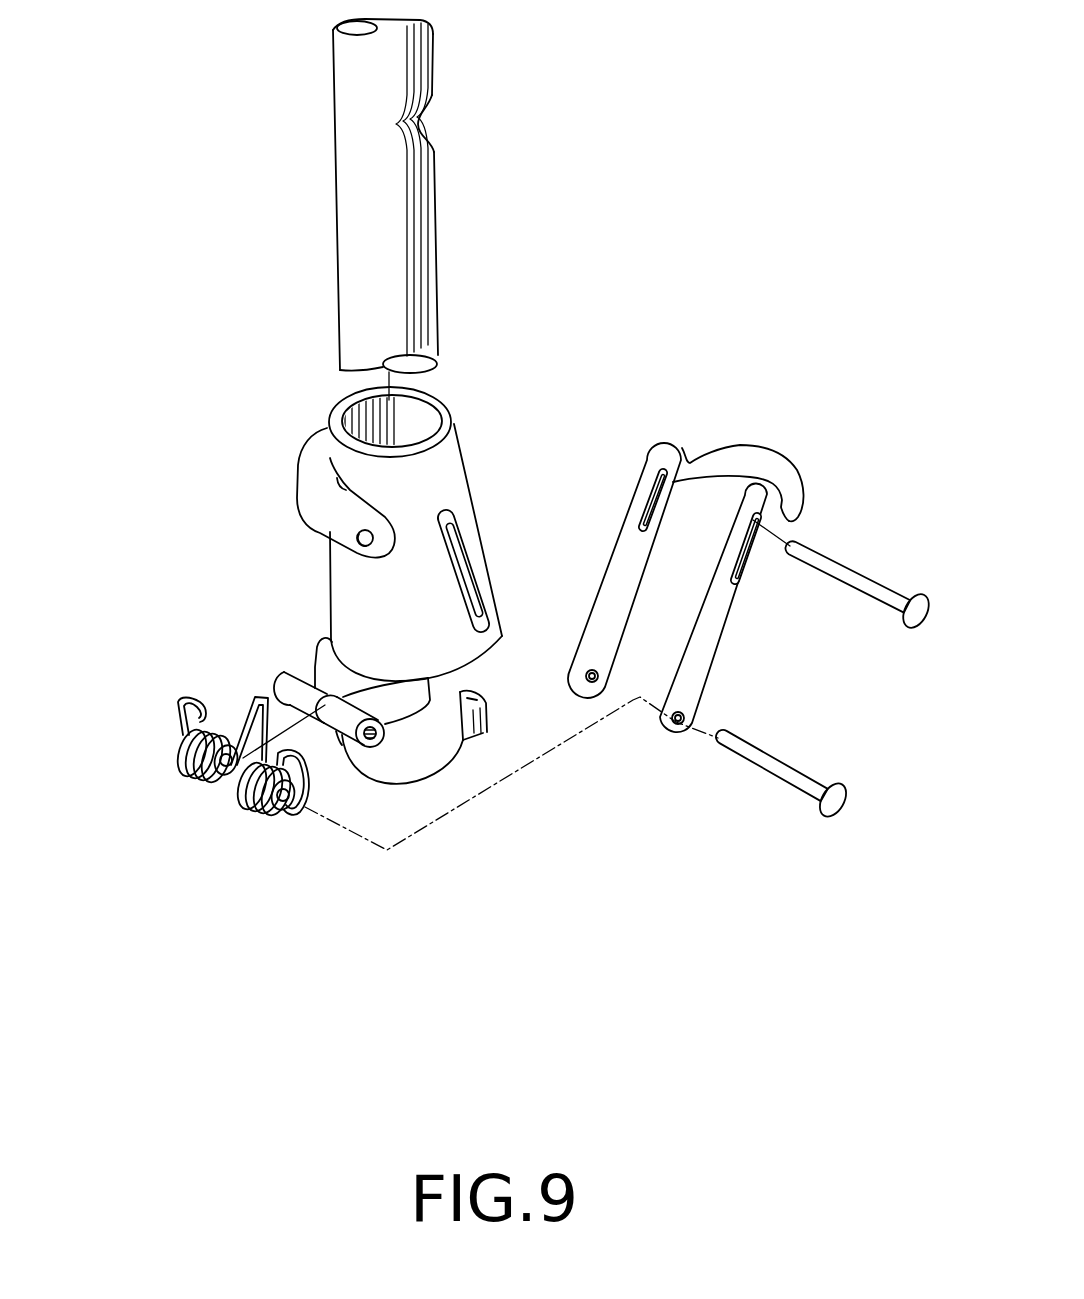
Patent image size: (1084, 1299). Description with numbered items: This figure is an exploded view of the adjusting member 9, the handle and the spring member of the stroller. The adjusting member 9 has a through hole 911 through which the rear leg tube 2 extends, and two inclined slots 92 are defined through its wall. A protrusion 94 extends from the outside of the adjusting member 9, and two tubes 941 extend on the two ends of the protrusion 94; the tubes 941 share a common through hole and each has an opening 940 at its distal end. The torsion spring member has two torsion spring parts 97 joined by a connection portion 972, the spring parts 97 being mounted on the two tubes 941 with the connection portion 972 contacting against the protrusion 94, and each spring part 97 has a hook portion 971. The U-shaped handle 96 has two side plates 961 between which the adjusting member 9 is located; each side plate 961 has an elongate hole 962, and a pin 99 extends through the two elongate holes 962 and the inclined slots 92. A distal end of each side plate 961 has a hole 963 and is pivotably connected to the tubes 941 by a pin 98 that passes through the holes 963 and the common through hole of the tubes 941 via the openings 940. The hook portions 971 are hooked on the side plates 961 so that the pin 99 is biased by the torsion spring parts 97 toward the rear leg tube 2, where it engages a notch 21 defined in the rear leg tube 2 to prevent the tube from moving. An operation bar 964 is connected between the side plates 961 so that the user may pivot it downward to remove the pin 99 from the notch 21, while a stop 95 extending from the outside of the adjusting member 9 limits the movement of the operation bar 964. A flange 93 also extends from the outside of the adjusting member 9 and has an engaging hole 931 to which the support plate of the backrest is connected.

The rear leg tube 2 is at (367, 195).
The notch 21 is at (433, 116).
The adjusting member 9 is at (343, 596).
The through hole 911 is at (423, 418).
The inclined slot 92 is at (464, 583).
The flange 93 is at (316, 467).
The engaging hole 931 is at (318, 533).
The protrusion 94 is at (300, 682).
The tube 941 is at (272, 688).
The opening 940 is at (372, 750).
The stop 95 is at (480, 683).
The U-shaped handle 96 is at (708, 601).
The side plate 961 is at (613, 594).
The elongate hole 962 is at (657, 503).
The hole 963 is at (594, 690).
The operation bar 964 is at (783, 463).
The torsion spring part 97 is at (192, 829).
The hook portion 971 is at (176, 697).
The connection portion 972 is at (238, 790).
The pin 98 is at (787, 773).
The pin 99 is at (843, 570).